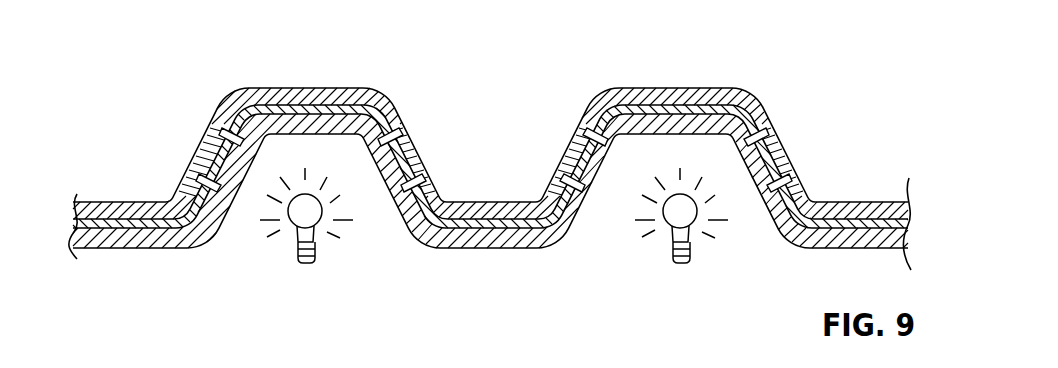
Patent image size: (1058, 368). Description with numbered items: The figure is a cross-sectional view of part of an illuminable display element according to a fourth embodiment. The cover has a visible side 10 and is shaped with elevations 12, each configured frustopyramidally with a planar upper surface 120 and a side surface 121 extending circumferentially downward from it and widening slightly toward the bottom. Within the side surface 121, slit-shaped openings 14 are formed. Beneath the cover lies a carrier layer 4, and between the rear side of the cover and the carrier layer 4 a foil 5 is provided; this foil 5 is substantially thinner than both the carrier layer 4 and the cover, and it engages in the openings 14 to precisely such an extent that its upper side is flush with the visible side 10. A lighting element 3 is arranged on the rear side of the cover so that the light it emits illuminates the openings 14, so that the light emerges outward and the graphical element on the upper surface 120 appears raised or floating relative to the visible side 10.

The elevation 12 is at (193, 109).
The visible side 10 is at (266, 87).
The upper surface 120 is at (330, 87).
The opening 14 is at (408, 138).
The foil 5 is at (723, 87).
The side surface 121 is at (805, 178).
The lighting element 3 is at (305, 224).
The carrier layer 4 is at (493, 249).